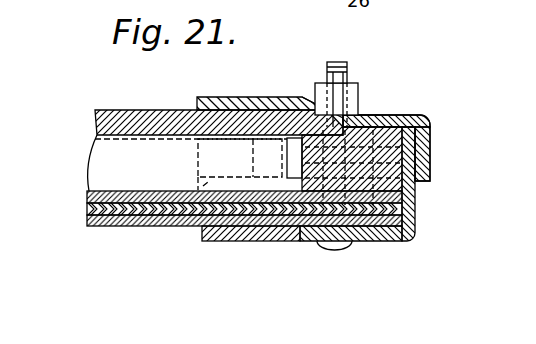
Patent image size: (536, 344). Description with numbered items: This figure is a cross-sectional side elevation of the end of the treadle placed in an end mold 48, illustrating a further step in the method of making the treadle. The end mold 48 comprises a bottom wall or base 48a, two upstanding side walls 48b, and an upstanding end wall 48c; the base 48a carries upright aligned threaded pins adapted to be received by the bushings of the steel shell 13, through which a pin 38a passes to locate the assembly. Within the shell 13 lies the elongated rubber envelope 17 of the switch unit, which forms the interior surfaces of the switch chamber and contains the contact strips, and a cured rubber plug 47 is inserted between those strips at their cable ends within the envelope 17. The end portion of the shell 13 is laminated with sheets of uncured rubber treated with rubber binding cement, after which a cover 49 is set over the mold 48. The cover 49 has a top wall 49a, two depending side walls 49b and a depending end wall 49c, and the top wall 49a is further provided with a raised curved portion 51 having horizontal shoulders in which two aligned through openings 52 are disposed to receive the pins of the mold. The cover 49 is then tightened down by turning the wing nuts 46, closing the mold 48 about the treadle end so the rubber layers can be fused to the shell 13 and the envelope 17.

The steel shell 13 is at (117, 207).
The rubber envelope 17 is at (100, 153).
The pin 38a is at (332, 62).
The wing nut 46 is at (350, 88).
The cured rubber plug 47 is at (293, 150).
The end mold 48 is at (339, 199).
The bottom wall or base 48a is at (370, 242).
The side wall 48b is at (185, 228).
The end wall 48c is at (412, 193).
The cover 49 is at (425, 126).
The top wall 49a is at (390, 115).
The side wall 49b is at (198, 160).
The end wall 49c is at (422, 160).
The raised curved portion 51 is at (237, 97).
The through opening 52 is at (365, 115).